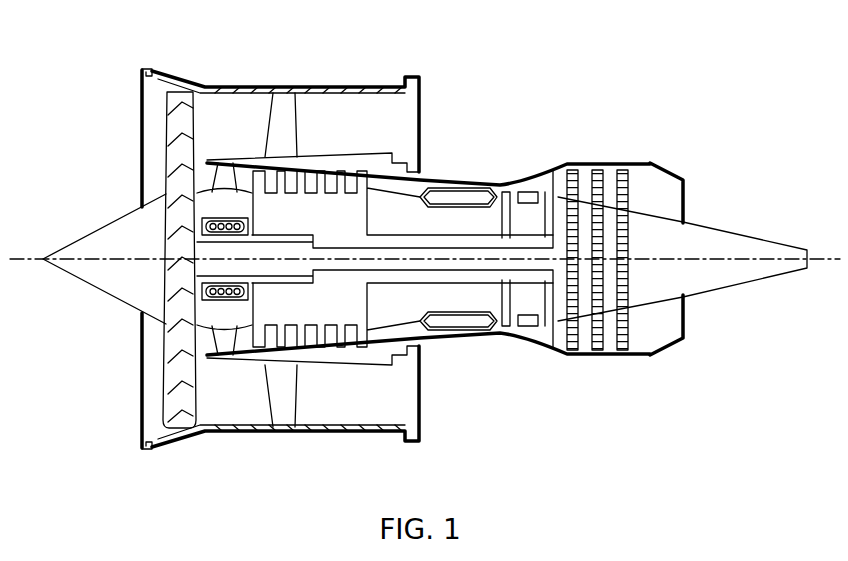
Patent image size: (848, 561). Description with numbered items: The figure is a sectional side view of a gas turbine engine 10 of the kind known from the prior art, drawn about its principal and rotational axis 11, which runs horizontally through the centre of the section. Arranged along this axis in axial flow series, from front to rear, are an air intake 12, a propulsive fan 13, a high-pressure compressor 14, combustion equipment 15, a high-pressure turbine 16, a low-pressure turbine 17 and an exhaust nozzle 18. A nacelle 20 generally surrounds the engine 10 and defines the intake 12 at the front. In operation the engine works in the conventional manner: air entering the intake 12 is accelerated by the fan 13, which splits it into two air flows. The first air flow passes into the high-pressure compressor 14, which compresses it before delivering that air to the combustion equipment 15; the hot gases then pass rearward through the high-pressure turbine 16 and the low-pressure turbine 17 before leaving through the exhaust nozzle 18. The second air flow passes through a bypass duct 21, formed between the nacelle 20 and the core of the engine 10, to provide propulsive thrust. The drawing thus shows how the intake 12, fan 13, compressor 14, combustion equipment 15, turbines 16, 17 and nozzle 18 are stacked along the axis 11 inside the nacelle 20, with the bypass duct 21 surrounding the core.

The gas turbine engine 10 is at (511, 127).
The principal and rotational axis 11 is at (43, 259).
The air intake 12 is at (139, 132).
The propulsive fan 13 is at (195, 88).
The high-pressure compressor 14 is at (347, 203).
The combustion equipment 15 is at (448, 196).
The high-pressure turbine 16 is at (548, 192).
The low-pressure turbine 17 is at (632, 205).
The exhaust nozzle 18 is at (672, 203).
The nacelle 20 is at (237, 432).
The bypass duct 21 is at (333, 418).